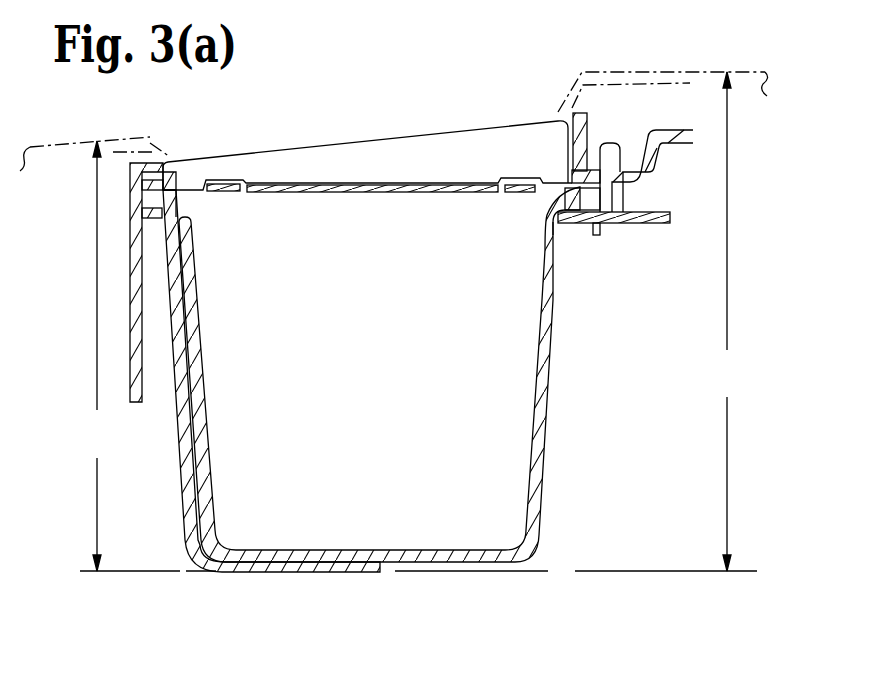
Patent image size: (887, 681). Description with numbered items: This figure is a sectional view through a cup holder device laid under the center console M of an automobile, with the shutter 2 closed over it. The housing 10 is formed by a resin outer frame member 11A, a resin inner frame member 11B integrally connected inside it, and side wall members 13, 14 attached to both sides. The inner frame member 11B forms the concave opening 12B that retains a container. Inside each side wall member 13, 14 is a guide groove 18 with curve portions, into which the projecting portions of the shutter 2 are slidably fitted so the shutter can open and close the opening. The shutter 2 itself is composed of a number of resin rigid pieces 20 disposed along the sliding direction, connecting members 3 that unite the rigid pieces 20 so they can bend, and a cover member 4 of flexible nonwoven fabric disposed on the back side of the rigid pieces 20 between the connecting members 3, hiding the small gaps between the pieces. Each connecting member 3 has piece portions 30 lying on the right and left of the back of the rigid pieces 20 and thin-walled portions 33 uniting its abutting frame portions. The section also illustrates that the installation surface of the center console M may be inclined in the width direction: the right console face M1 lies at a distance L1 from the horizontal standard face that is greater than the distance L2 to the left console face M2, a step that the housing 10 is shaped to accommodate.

The shutter 2 is at (367, 132).
The rigid piece 20 is at (380, 137).
The connecting member 3 is at (375, 252).
The cover member 4 is at (383, 194).
The housing 10 is at (382, 433).
The outer frame member 11A is at (382, 578).
The inner frame member 11B is at (459, 577).
The opening 12B is at (388, 443).
The side wall member 13 is at (670, 168).
The side wall member 14 is at (130, 385).
The guide groove 18 is at (138, 232).
The piece portion 30 is at (226, 194).
The thin-walled portion 33 is at (168, 198).
The center console M is at (709, 66).
The right console face M1 is at (660, 66).
The left console face M2 is at (110, 136).
The distance L1 is at (729, 321).
The distance L2 is at (98, 356).